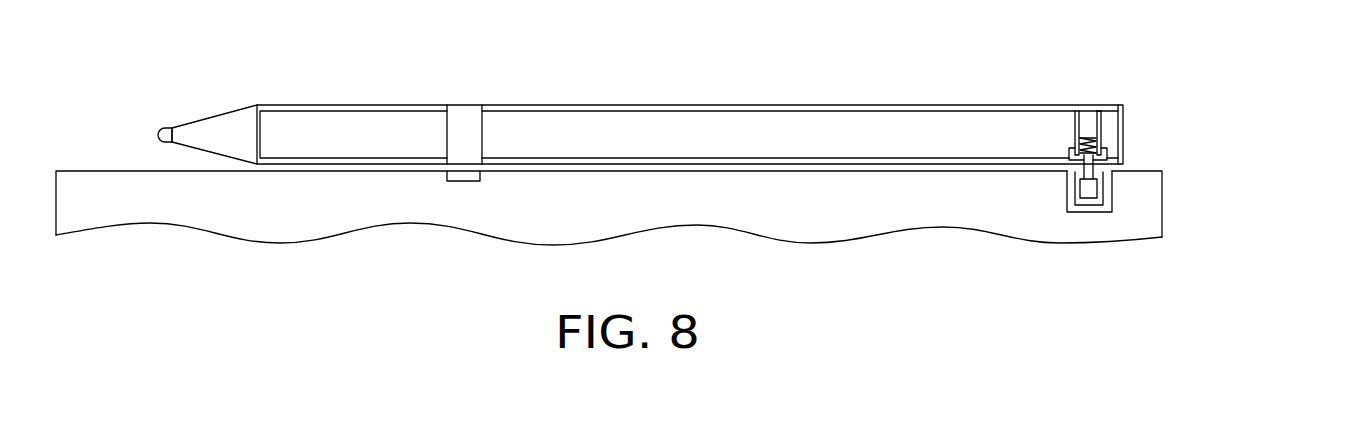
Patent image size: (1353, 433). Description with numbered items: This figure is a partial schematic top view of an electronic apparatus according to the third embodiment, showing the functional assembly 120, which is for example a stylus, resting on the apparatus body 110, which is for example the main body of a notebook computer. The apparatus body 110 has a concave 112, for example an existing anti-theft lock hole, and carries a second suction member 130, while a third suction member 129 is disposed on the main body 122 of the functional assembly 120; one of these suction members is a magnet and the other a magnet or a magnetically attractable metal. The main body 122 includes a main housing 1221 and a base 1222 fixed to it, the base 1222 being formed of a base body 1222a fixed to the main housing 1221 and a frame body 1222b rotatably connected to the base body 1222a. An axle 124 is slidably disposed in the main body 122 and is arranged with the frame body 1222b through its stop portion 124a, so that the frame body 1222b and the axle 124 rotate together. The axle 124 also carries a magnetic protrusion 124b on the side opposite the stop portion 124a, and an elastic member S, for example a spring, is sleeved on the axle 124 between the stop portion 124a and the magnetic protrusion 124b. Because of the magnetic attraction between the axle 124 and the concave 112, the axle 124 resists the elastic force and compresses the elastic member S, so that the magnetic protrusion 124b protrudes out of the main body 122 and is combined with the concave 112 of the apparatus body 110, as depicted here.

The apparatus body 110 is at (907, 208).
The concave 112 is at (1105, 191).
The functional assembly 120 is at (661, 97).
The main body 122 is at (1208, 108).
The main housing 1221 is at (1125, 122).
The base 1222 is at (1178, 108).
The base body 1222a is at (1105, 151).
The frame body 1222b is at (1100, 130).
The axle 124 is at (1028, 166).
The stop portion 124a is at (1082, 142).
The magnetic protrusion 124b is at (1088, 190).
The third suction member 129 is at (464, 128).
The second suction member 130 is at (463, 177).
The elastic member S is at (1089, 137).